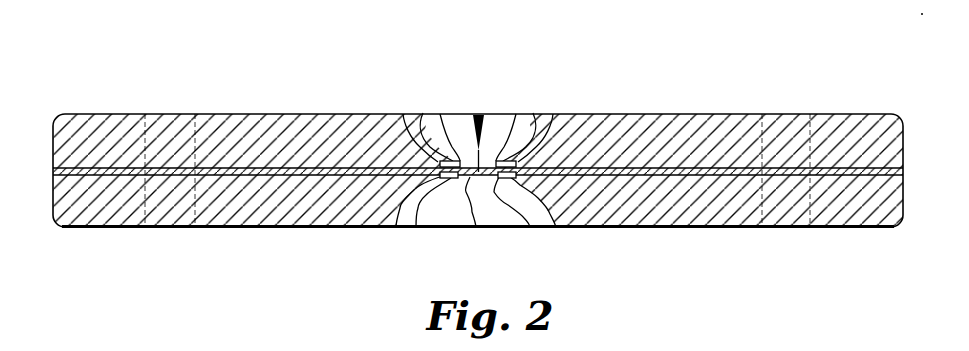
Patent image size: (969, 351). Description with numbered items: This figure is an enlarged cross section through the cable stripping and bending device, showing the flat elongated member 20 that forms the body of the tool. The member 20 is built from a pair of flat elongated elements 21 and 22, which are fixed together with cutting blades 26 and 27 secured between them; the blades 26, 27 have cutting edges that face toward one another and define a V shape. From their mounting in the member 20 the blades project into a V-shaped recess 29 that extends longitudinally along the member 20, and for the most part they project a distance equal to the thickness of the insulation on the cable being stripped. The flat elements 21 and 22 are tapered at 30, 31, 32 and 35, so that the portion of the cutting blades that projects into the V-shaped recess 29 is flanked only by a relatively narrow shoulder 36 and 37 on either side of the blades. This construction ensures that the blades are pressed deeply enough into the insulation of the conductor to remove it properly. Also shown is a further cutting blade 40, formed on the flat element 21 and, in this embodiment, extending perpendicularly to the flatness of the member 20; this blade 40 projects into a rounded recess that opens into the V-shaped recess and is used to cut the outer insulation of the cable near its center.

The flat elongated member 20 is at (662, 72).
The flat elongated element 21 is at (268, 132).
The flat elongated element 22 is at (657, 207).
The cutting blade 26 is at (287, 175).
The cutting blade 27 is at (717, 168).
The V-shaped recess 29 is at (476, 228).
The taper 30 is at (557, 114).
The taper 31 is at (403, 114).
The taper 32 is at (403, 217).
The taper 35 is at (556, 215).
The shoulder 36 is at (417, 227).
The shoulder 37 is at (421, 113).
The cutting blade 40 is at (477, 114).